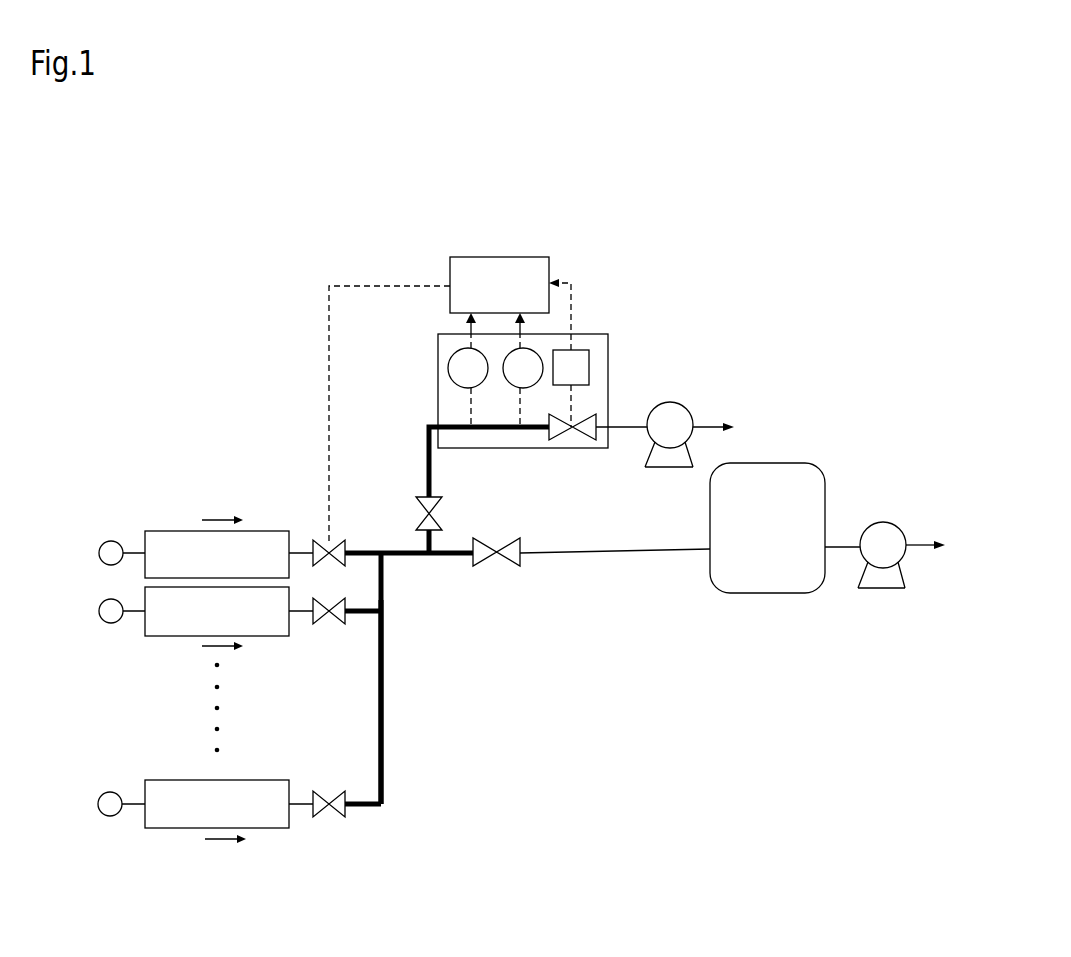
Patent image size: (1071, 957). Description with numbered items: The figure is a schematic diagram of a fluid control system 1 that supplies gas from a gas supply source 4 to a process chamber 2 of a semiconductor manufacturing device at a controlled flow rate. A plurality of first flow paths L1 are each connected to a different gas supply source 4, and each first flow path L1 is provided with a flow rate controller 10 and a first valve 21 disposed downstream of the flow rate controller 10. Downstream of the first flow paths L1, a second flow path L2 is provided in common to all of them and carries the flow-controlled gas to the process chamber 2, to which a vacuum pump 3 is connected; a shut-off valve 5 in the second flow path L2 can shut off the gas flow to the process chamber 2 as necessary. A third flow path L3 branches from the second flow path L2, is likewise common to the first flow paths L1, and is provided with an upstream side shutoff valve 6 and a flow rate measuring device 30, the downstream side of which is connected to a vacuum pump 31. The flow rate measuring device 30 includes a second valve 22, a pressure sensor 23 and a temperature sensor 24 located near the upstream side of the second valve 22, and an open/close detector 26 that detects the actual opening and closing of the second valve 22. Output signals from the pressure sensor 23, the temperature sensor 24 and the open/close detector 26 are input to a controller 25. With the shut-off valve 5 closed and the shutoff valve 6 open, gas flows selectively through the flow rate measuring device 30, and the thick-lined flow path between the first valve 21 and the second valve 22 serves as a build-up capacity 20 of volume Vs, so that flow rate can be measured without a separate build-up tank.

The fluid control system 1 is at (224, 330).
The process chamber 2 is at (768, 594).
The vacuum pump 3 is at (880, 589).
The gas supply source 4 is at (113, 541).
The shut-off valve 5 is at (493, 565).
The upstream side shutoff valve 6 is at (442, 513).
The flow rate controller 10 is at (178, 531).
The build-up capacity 20 is at (400, 558).
The first valve 21 is at (333, 543).
The second valve 22 is at (575, 440).
The pressure sensor 23 is at (510, 388).
The temperature sensor 24 is at (448, 368).
The controller 25 is at (496, 257).
The open/close detector 26 is at (590, 350).
The flow rate measuring device 30 is at (608, 378).
The vacuum pump 31 is at (688, 403).
The first flow path L1 is at (385, 767).
The second flow path L2 is at (603, 556).
The third flow path L3 is at (435, 477).